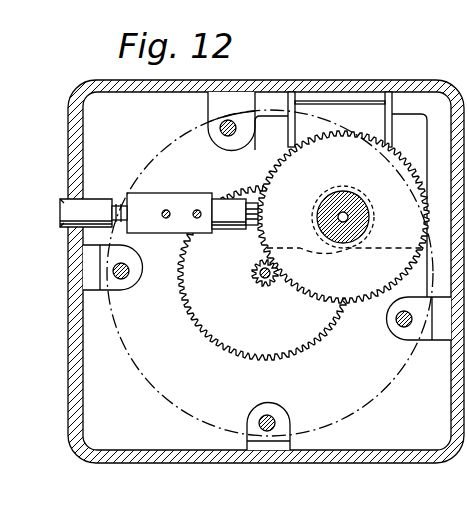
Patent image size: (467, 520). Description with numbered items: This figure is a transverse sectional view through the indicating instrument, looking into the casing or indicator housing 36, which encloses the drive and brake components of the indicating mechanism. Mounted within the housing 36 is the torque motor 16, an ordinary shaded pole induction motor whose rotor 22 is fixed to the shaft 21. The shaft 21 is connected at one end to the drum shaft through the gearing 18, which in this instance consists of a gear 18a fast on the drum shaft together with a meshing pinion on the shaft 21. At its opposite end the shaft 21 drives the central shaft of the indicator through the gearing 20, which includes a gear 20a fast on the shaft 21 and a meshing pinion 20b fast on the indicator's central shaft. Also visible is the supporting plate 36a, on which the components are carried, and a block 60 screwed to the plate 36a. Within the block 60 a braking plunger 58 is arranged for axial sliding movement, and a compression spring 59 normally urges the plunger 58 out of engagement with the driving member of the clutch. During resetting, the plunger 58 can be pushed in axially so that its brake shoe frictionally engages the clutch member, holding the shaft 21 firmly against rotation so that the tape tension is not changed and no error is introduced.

The indicator housing 36 is at (338, 81).
The torque motor 16 is at (371, 108).
The gearing 18 is at (459, 60).
The gear 18a is at (310, 337).
The rotor 22 is at (352, 187).
The shaft 21 is at (348, 217).
The pinion 20b is at (262, 285).
The gearing 20 is at (286, 296).
The gear 20a is at (308, 294).
The block 60 is at (178, 196).
The compression spring 59 is at (124, 205).
The braking plunger 58 is at (252, 225).
The supporting plate 36a is at (392, 378).